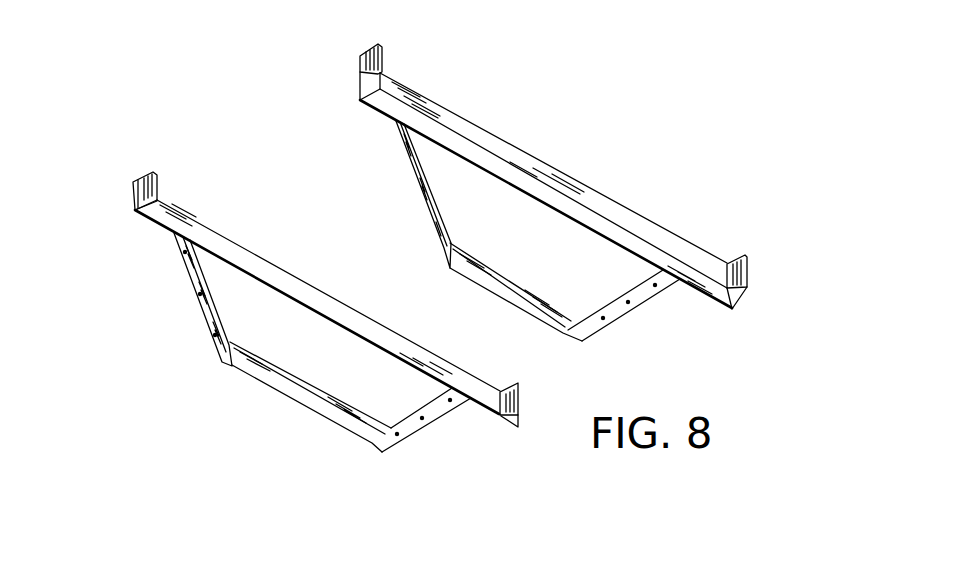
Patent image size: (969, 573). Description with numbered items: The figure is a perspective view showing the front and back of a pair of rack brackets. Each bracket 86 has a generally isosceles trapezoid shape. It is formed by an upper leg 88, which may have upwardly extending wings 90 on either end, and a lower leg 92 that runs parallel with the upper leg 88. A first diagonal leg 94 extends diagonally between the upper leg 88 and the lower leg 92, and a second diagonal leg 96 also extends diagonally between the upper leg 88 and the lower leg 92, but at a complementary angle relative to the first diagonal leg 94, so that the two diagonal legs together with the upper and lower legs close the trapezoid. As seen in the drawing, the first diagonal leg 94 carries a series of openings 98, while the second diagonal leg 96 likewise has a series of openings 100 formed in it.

The bracket 86 is at (137, 339).
The upper leg 88 is at (292, 282).
The wings 90 is at (140, 177).
The lower leg 92 is at (293, 390).
The first diagonal leg 94 is at (393, 447).
The second diagonal leg 96 is at (208, 322).
The openings 98 is at (418, 425).
The openings 100 is at (183, 252).